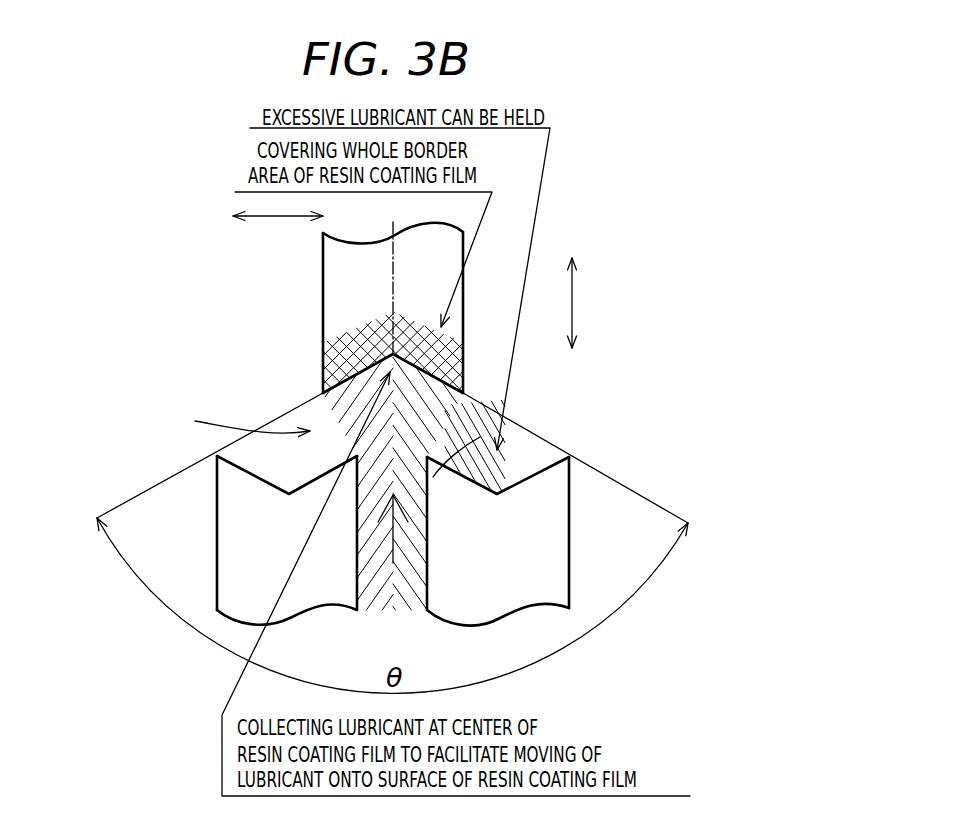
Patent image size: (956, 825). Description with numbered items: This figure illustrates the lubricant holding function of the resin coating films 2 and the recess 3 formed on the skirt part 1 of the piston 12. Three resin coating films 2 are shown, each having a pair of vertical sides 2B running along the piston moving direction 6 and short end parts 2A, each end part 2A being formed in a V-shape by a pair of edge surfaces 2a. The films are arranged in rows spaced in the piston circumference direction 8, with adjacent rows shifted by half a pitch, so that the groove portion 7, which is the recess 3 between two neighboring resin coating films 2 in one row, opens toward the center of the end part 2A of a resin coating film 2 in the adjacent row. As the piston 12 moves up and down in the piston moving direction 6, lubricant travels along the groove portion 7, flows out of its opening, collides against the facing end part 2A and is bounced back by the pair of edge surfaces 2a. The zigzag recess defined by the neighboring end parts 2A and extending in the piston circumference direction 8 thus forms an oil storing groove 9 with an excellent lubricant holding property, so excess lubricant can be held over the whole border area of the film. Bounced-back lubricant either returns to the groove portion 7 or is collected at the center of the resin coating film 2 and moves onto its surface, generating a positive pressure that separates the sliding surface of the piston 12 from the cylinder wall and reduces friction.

The skirt part 1 is at (573, 413).
The piston 12 is at (408, 449).
The resin coating film 2 is at (333, 271).
The end part 2A is at (327, 355).
The vertical side 2B is at (323, 298).
The edge surface 2a is at (323, 398).
The recess 3 is at (315, 516).
The groove portion 7 is at (417, 570).
The oil storing groove 9 is at (229, 428).
The piston moving direction 6 is at (580, 302).
The piston circumference direction 8 is at (265, 217).